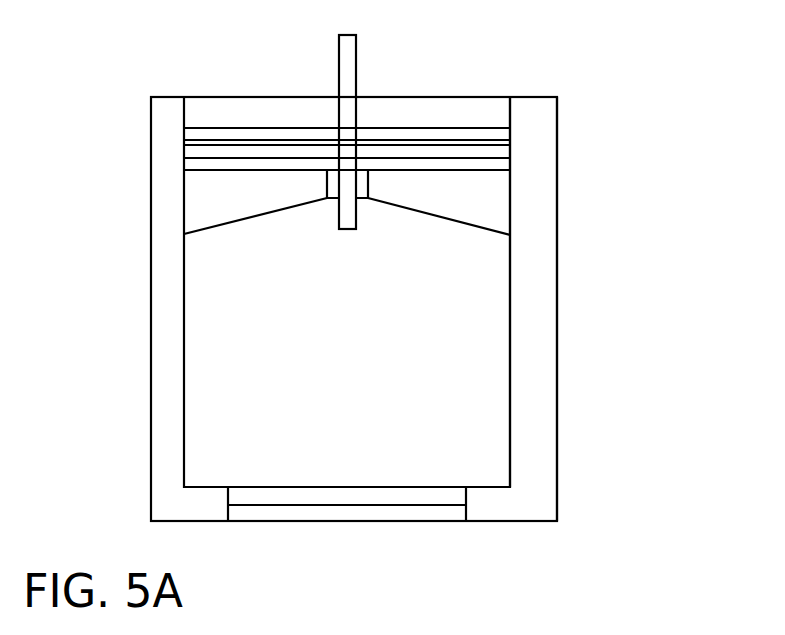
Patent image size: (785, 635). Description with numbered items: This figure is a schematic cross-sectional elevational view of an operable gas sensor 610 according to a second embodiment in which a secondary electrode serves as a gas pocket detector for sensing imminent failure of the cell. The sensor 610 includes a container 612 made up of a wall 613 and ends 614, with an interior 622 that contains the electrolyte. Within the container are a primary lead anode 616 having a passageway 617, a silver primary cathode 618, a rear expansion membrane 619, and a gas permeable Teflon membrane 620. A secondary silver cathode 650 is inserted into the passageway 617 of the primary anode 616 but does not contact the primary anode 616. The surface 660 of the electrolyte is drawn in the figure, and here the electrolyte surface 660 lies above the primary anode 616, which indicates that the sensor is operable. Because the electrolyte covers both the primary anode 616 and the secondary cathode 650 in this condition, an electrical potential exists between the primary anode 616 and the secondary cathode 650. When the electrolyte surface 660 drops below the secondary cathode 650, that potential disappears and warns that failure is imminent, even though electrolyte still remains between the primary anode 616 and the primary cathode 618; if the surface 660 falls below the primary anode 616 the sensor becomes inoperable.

The sensor 610 is at (571, 136).
The container 612 is at (547, 498).
The wall 613 is at (553, 427).
The ends 614 is at (416, 94).
The primary lead anode 616 is at (490, 207).
The passageway 617 is at (328, 182).
The silver primary cathode 618 is at (408, 497).
The rear expansion membrane 619 is at (220, 140).
The gas permeable Teflon membrane 620 is at (313, 507).
The interior 622 is at (462, 357).
The secondary silver cathode 650 is at (345, 108).
The electrolyte surface 660 is at (467, 157).